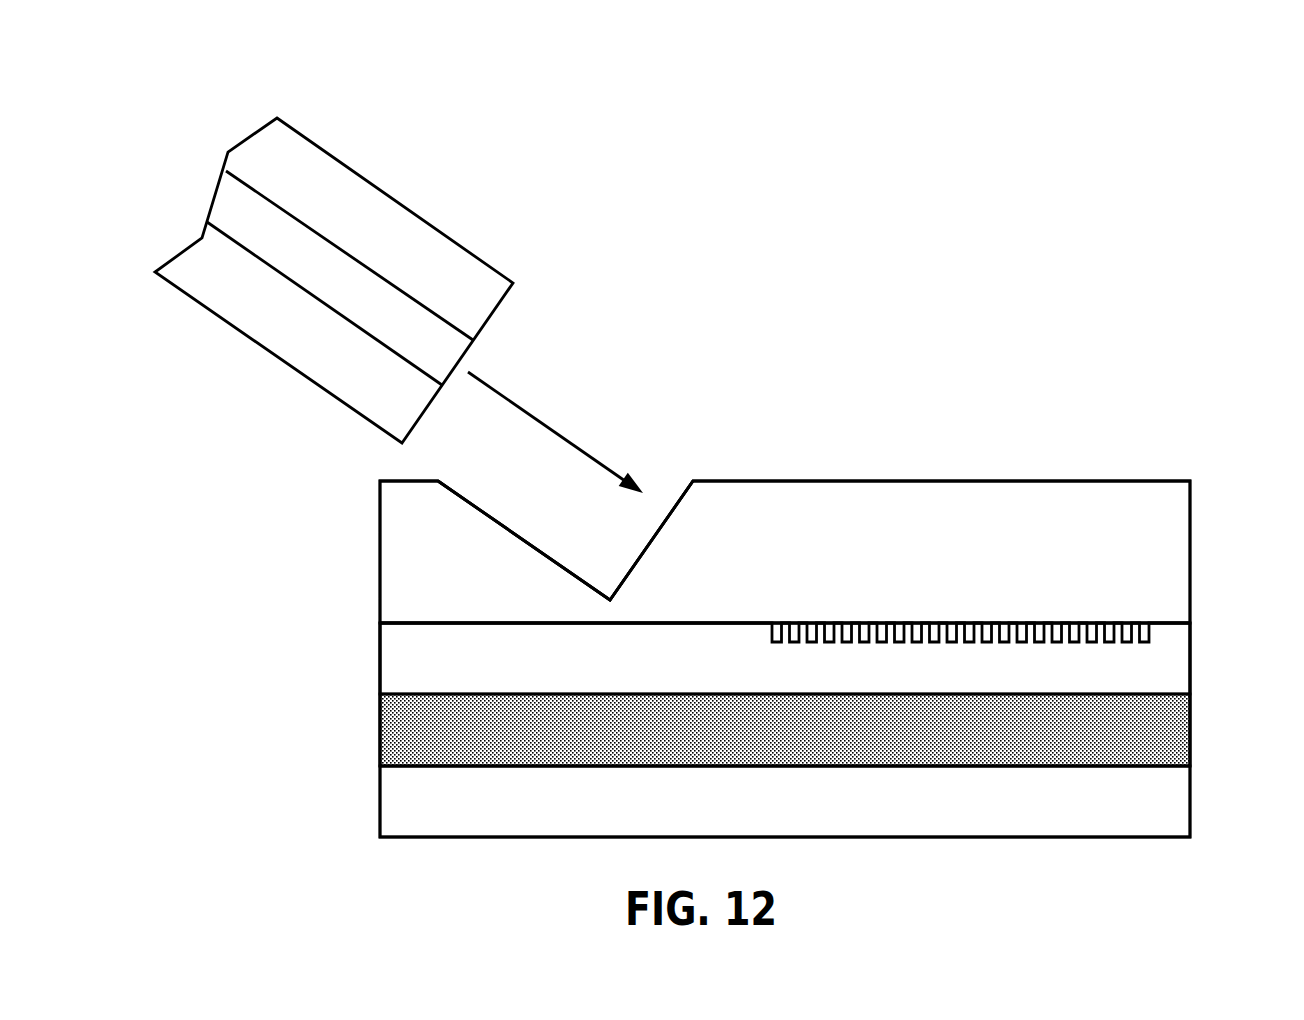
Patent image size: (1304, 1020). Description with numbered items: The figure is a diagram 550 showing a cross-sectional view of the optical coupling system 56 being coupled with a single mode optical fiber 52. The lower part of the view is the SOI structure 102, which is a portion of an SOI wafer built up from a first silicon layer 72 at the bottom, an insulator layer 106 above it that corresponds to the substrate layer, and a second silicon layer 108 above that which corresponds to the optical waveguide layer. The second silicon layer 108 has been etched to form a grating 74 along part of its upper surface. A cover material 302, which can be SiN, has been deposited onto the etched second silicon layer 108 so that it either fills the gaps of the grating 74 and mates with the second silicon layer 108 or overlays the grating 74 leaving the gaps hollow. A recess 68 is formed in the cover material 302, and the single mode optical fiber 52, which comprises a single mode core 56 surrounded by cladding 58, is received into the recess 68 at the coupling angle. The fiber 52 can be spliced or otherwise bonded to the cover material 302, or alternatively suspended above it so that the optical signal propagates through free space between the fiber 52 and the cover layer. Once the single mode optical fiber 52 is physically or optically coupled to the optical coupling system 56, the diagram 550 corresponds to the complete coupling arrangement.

The diagram 550 is at (1170, 224).
The single mode optical fiber 52 is at (320, 145).
The cladding 58 is at (301, 182).
The optical coupling system 56 is at (271, 239).
The cover material 302 is at (495, 566).
The recess 68 is at (657, 538).
The grating 74 is at (955, 590).
The second silicon layer 108 is at (495, 671).
The SOI structure 102 is at (363, 683).
The insulator layer 106 is at (495, 744).
The first silicon layer 72 is at (491, 815).